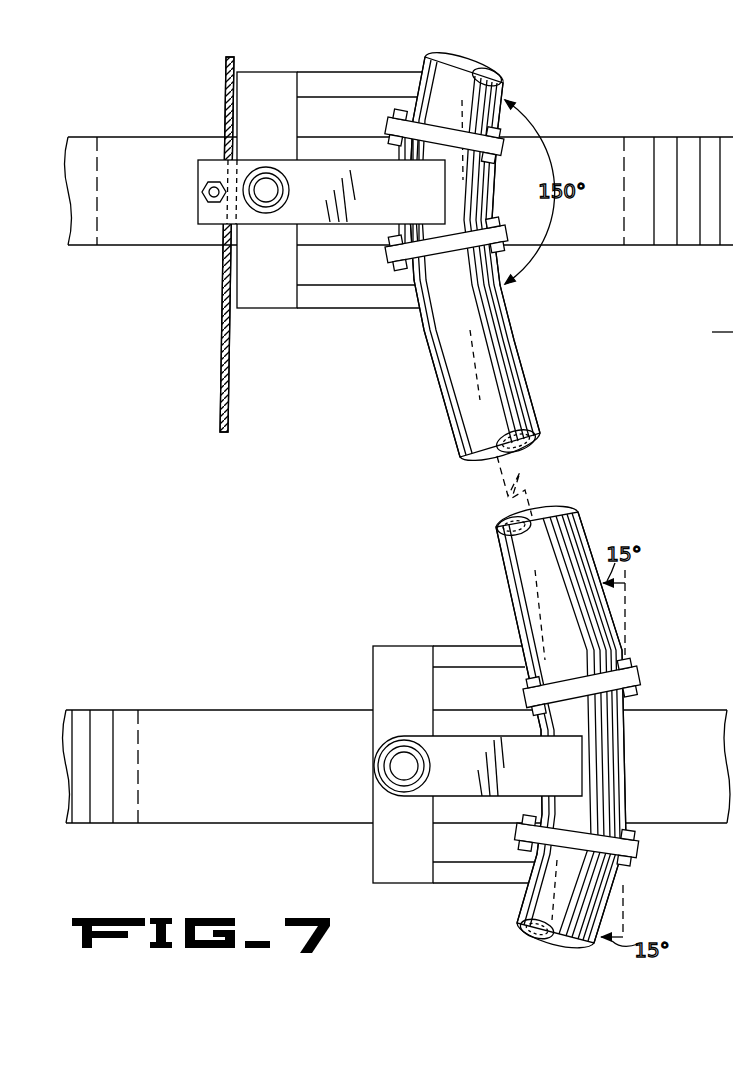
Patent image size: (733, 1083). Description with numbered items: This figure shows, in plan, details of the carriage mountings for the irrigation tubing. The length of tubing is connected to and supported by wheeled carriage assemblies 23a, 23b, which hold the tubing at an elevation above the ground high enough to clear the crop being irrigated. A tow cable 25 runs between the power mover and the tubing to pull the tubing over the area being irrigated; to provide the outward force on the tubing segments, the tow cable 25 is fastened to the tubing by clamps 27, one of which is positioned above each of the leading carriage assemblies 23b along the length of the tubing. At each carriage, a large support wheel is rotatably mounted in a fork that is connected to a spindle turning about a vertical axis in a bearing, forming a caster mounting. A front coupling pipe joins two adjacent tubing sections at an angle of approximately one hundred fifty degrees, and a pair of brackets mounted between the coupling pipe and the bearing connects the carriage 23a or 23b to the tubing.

The clamp 27 is at (206, 172).
The tow cable 25 is at (221, 383).
The carriage assembly 23a is at (657, 687).
The leading carriage assembly 23b is at (219, 272).